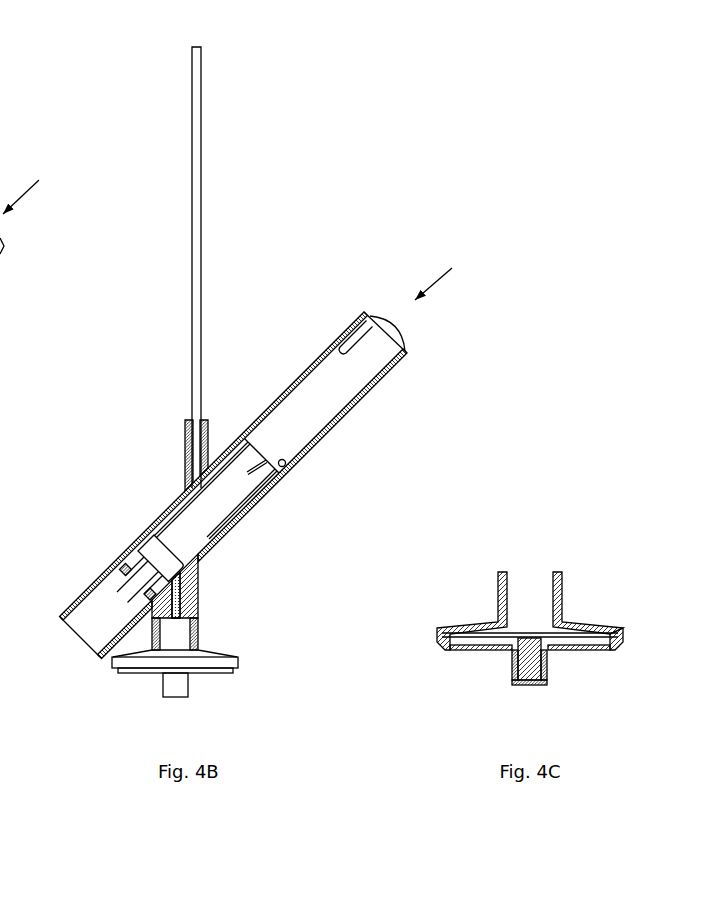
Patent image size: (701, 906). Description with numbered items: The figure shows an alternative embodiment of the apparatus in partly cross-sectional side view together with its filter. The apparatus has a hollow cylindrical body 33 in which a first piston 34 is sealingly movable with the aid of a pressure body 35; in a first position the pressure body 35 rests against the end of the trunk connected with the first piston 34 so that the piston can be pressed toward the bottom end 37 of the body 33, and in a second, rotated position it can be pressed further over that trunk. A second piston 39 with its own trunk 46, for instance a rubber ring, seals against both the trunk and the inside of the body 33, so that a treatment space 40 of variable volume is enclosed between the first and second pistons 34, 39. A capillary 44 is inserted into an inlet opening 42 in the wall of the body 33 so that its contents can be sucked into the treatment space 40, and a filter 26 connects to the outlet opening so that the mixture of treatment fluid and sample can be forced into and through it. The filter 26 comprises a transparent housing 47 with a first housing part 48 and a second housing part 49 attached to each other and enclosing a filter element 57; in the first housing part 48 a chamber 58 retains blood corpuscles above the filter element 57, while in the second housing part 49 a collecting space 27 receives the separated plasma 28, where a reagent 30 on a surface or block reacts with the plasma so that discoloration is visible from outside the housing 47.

In FIG. 4B, the filter 26 is at (199, 678).
In FIG. 4C, the filter 26 is at (463, 602).
In FIG. 4C, the collecting space 27 is at (580, 641).
In FIG. 4B, the separated plasma 28 is at (176, 603).
In FIG. 4C, the reagent 30 is at (528, 636).
In FIG. 4B, the hollow cylindrical body 33 is at (78, 617).
In FIG. 4B, the first piston 34 is at (132, 587).
In FIG. 4B, the pressure body 35 is at (340, 403).
In FIG. 4B, the bottom end 37 is at (62, 618).
In FIG. 4B, the second piston 39 is at (152, 542).
In FIG. 4B, the treatment space 40 is at (138, 548).
In FIG. 4B, the inlet opening 42 is at (187, 508).
In FIG. 4B, the capillary 44 is at (192, 81).
In FIG. 4B, the trunk 46 is at (207, 540).
In FIG. 4B, the housing 47 is at (244, 678).
In FIG. 4C, the housing 47 is at (595, 602).
In FIG. 4C, the first housing part 48 is at (620, 633).
In FIG. 4C, the second housing part 49 is at (618, 643).
In FIG. 4C, the filter element 57 is at (468, 638).
In FIG. 4C, the chamber 58 is at (490, 632).